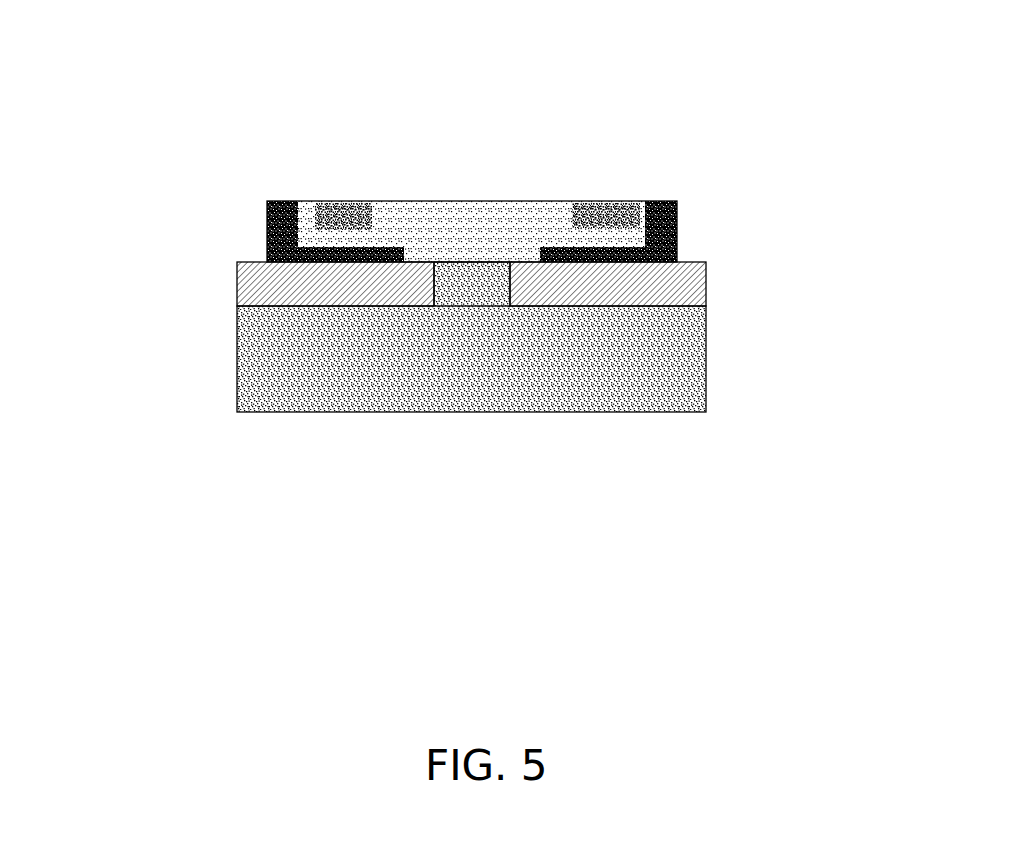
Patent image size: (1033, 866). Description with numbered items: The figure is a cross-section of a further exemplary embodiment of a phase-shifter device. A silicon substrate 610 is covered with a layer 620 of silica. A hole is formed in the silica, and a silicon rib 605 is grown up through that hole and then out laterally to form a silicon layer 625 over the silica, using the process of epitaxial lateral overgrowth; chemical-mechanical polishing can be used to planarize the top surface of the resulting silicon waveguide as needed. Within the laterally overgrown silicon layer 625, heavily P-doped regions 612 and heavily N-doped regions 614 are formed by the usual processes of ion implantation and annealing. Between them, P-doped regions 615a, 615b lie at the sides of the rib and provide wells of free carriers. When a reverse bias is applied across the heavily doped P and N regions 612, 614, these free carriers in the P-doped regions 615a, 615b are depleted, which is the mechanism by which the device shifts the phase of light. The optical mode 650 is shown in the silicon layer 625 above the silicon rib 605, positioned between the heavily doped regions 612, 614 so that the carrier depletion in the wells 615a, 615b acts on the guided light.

The silicon rib 605 is at (480, 292).
The silicon substrate 610 is at (660, 367).
The heavily P-doped regions 612 is at (600, 202).
The heavily N-doped regions 614 is at (275, 210).
The P-doped region 615a is at (418, 264).
The P-doped region 615b is at (525, 262).
The layer of silica 620 is at (688, 292).
The silicon layer 625 is at (255, 230).
The optical mode 650 is at (466, 232).